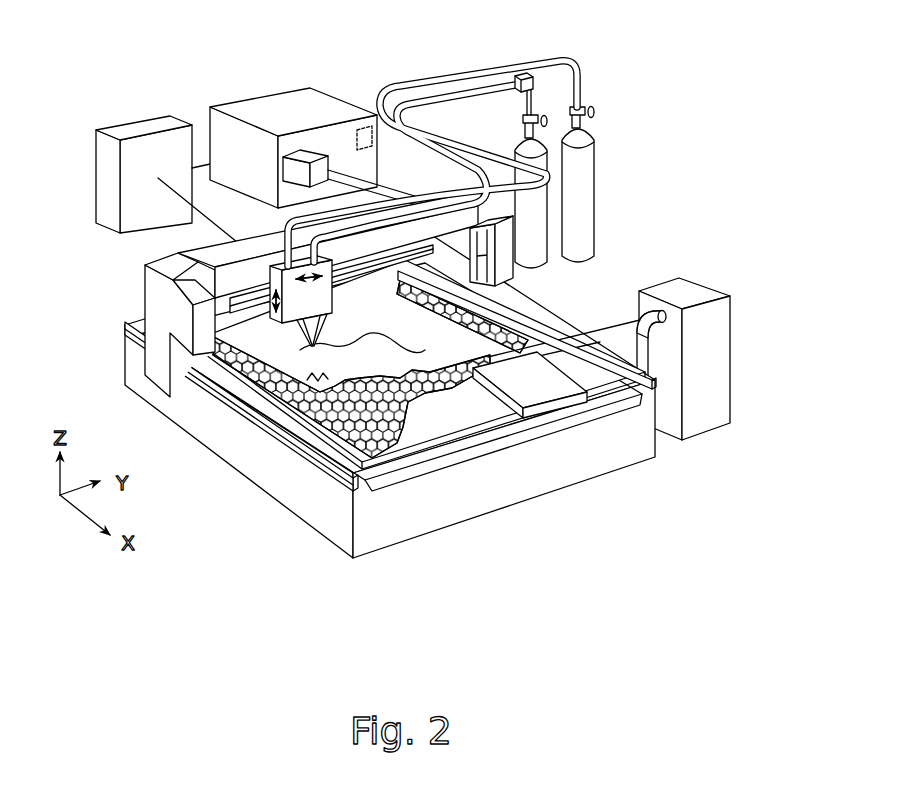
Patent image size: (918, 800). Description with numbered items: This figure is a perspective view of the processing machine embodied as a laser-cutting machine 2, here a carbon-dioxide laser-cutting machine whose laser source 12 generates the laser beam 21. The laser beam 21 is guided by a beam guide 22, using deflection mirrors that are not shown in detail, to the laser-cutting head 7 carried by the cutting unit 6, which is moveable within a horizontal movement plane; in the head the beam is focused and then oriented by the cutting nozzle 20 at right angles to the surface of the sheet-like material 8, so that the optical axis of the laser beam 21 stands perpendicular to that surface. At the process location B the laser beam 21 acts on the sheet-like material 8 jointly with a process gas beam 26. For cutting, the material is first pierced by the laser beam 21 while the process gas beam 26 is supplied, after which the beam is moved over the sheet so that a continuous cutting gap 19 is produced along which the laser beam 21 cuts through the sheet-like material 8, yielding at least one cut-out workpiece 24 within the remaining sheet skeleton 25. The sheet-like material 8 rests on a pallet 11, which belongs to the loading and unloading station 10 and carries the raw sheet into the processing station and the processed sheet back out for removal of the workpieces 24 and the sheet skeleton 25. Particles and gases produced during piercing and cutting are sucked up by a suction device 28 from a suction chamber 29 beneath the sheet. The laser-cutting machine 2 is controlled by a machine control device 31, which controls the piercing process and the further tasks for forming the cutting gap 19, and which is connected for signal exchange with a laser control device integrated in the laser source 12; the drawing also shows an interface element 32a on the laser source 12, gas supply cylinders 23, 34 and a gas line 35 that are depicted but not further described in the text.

The laser-cutting machine 2 is at (106, 285).
The cutting unit 6 is at (234, 247).
The laser-cutting head 7 is at (197, 390).
The sheet-like material 8 is at (488, 328).
The loading and unloading station 10 is at (536, 328).
The pallet 11 is at (442, 492).
The laser source 12 is at (273, 107).
The cutting gap 19 is at (425, 350).
The cutting nozzle 20 is at (235, 402).
The laser beam 21 is at (326, 331).
The beam guide 22 is at (446, 254).
The oxygen gas cylinder 23 is at (536, 243).
The workpiece 24 is at (466, 287).
The sheet skeleton 25 is at (310, 348).
The process gas beam 26 is at (297, 362).
The suction device 28 is at (683, 300).
The suction chamber 29 is at (488, 408).
The machine control device 31 is at (130, 128).
The interface 32a is at (357, 136).
The nitrogen gas cylinder 34 is at (580, 146).
The gas supply line 35 is at (506, 68).
The process location B is at (292, 338).